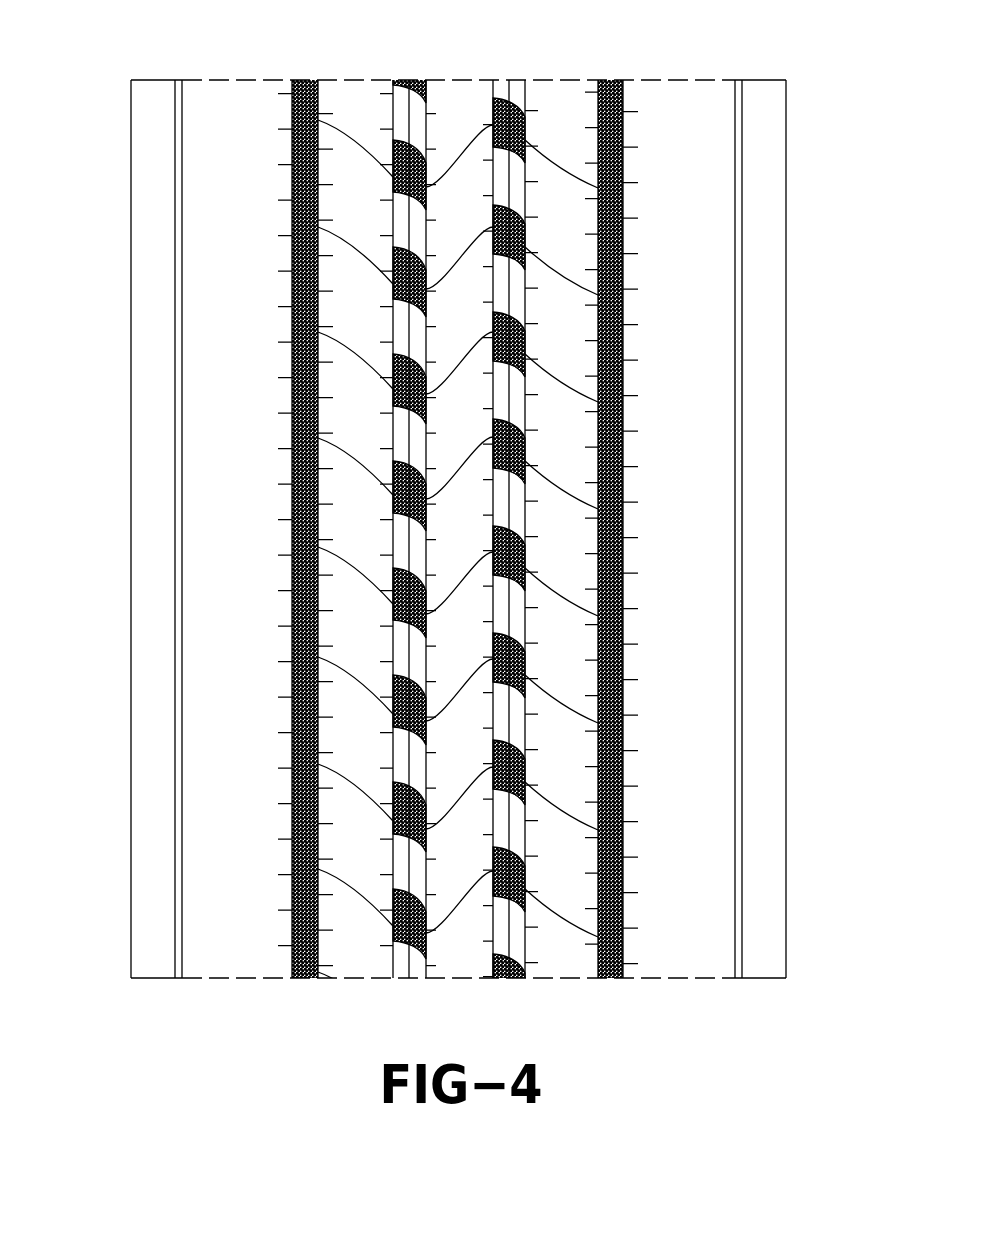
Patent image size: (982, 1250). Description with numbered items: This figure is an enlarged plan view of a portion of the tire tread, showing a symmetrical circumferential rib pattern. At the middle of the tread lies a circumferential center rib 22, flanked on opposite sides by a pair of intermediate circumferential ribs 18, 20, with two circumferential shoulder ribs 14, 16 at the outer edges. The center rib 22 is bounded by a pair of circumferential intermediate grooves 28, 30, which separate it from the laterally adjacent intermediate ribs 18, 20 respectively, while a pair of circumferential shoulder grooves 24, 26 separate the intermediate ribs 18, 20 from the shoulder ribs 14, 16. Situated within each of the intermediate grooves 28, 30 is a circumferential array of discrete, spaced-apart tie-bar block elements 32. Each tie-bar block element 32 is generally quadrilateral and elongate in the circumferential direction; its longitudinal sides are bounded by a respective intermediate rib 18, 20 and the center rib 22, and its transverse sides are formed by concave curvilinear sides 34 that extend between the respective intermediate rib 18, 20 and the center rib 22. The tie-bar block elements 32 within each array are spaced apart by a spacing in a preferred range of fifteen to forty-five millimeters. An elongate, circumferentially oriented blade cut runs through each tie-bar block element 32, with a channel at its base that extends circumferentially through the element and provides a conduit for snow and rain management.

The shoulder rib 14 is at (220, 835).
The shoulder rib 16 is at (680, 745).
The intermediate circumferential rib 18 is at (362, 640).
The intermediate circumferential rib 20 is at (565, 640).
The circumferential center rib 22 is at (460, 118).
The circumferential shoulder groove 24 is at (300, 533).
The circumferential shoulder groove 26 is at (612, 458).
The circumferential intermediate groove 28 is at (237, 505).
The circumferential intermediate groove 30 is at (510, 345).
The tie-bar block element 32 is at (412, 223).
The concave curvilinear side 34 is at (403, 178).